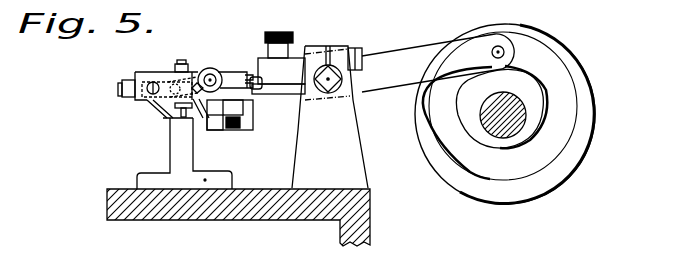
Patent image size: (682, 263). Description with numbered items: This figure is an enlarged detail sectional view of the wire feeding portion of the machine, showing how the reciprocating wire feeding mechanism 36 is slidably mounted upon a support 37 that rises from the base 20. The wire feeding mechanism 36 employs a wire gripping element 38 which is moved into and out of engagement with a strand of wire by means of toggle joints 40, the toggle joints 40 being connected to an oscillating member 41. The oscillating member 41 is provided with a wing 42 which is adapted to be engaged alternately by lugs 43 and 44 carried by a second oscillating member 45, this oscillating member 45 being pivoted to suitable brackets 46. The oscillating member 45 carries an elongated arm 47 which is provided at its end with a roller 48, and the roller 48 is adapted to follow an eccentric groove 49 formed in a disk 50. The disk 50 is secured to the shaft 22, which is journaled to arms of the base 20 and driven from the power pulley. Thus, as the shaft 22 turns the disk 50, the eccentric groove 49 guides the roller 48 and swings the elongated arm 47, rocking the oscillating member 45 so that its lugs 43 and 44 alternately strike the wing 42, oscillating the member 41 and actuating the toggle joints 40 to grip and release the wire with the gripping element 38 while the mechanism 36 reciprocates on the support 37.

The base 20 is at (140, 220).
The shaft 22 is at (508, 128).
The reciprocating wire feeding mechanism 36 is at (192, 62).
The support 37 is at (180, 144).
The wire gripping element 38 is at (154, 84).
The toggle joints 40 is at (227, 62).
The oscillating member 41 is at (238, 56).
The wing 42 is at (262, 83).
The lug 43 is at (268, 58).
The lug 44 is at (257, 100).
The oscillating member 45 is at (295, 85).
The brackets 46 is at (348, 157).
The elongated arm 47 is at (394, 54).
The roller 48 is at (514, 50).
The eccentric groove 49 is at (572, 93).
The disk 50 is at (553, 175).